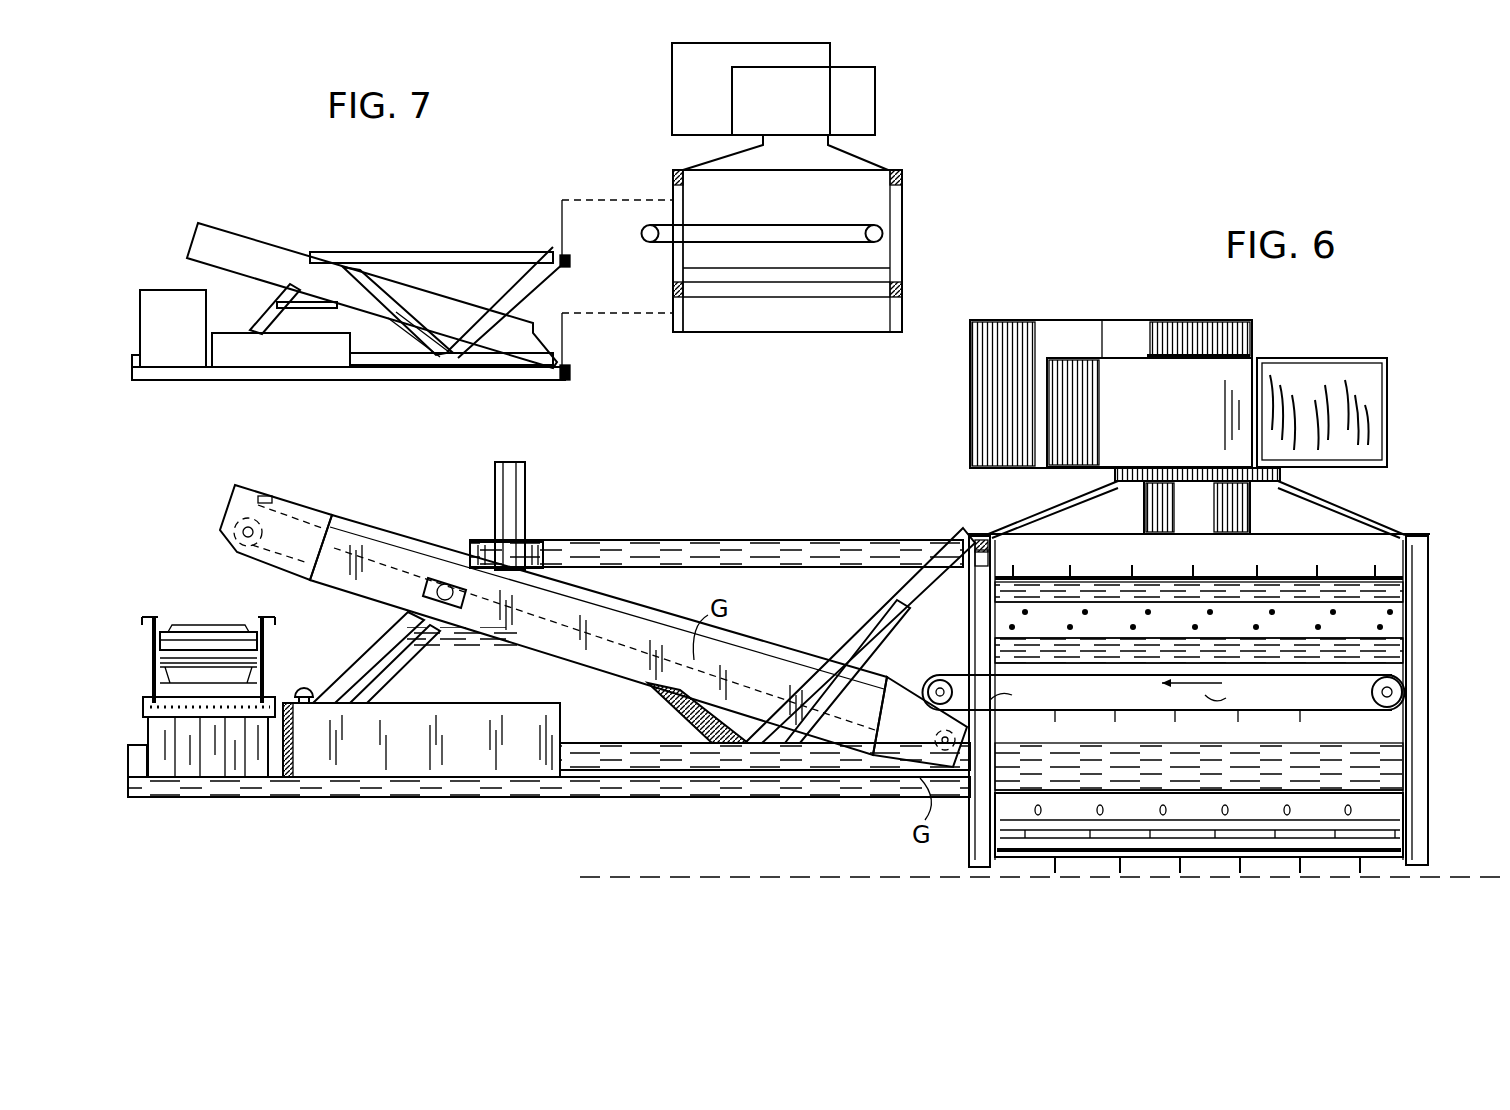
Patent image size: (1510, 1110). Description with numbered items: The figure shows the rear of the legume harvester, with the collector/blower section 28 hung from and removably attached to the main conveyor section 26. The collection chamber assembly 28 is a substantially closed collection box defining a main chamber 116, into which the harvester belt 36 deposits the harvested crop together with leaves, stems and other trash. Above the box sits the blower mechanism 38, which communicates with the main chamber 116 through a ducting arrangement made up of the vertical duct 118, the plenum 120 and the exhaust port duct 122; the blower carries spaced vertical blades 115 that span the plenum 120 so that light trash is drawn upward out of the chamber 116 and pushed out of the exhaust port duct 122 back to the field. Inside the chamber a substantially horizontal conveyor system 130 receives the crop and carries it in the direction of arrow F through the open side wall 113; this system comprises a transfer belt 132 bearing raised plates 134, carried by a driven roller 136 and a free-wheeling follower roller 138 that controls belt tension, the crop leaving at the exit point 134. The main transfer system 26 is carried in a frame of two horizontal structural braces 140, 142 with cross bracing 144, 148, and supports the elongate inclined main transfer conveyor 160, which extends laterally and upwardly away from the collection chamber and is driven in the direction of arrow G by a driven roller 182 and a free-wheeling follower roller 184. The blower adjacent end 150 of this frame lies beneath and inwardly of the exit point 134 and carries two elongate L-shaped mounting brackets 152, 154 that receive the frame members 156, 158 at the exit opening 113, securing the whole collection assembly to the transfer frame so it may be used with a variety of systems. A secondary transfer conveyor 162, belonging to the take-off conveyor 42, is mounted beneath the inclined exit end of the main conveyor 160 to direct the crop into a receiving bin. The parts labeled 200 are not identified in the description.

In FIG. 7, the main conveyor section 26 is at (412, 230).
In FIG. 6, the main conveyor section 26 is at (658, 592).
In FIG. 7, the collection chamber assembly 28 is at (824, 333).
In FIG. 6, the collection chamber assembly 28 is at (1442, 723).
In FIG. 6, the harvester belt 36 is at (1428, 588).
In FIG. 7, the blower mechanism 38 is at (850, 57).
In FIG. 6, the blower mechanism 38 is at (1245, 307).
In FIG. 7, the take-off conveyor 42 is at (165, 283).
In FIG. 6, the take-off conveyor 42 is at (187, 608).
In FIG. 7, the open side wall 113 is at (673, 260).
In FIG. 6, the open side wall 113 is at (952, 651).
In FIG. 6, the vertical blades 115 is at (1355, 378).
In FIG. 7, the main chamber 116 is at (862, 208).
In FIG. 6, the main chamber 116 is at (1390, 545).
In FIG. 6, the vertical duct 118 is at (1228, 507).
In FIG. 7, the plenum 120 is at (688, 52).
In FIG. 6, the plenum 120 is at (1253, 342).
In FIG. 7, the exhaust port duct 122 is at (877, 107).
In FIG. 6, the exhaust port duct 122 is at (1388, 418).
In FIG. 7, the horizontal conveyor system 130 is at (775, 228).
In FIG. 6, the horizontal conveyor system 130 is at (1403, 660).
In FIG. 6, the transfer belt 132 is at (1292, 712).
In FIG. 7, the raised plates 134 is at (632, 222).
In FIG. 6, the raised plates 134 is at (1233, 742).
In FIG. 6, the driven roller 136 is at (920, 722).
In FIG. 6, the free-wheeling follower roller 138 is at (1402, 690).
In FIG. 7, the horizontal structural brace 140 is at (470, 373).
In FIG. 6, the horizontal structural brace 140 is at (740, 797).
In FIG. 7, the horizontal structural brace 142 is at (397, 250).
In FIG. 6, the horizontal structural brace 142 is at (747, 540).
In FIG. 6, the cross bracing 144 is at (887, 607).
In FIG. 6, the cross bracing 148 is at (667, 703).
In FIG. 7, the blower adjacent end 150 is at (575, 275).
In FIG. 6, the blower adjacent end 150 is at (905, 772).
In FIG. 7, the L-shaped mounting bracket 152 is at (572, 372).
In FIG. 7, the L-shaped mounting bracket 154 is at (572, 258).
In FIG. 6, the L-shaped mounting bracket 154 is at (993, 557).
In FIG. 7, the frame member 156 is at (683, 297).
In FIG. 7, the frame member 158 is at (692, 177).
In FIG. 6, the frame member 158 is at (985, 538).
In FIG. 7, the main transfer conveyor 160 is at (229, 227).
In FIG. 6, the main transfer conveyor 160 is at (318, 513).
In FIG. 7, the secondary transfer conveyor 162 is at (178, 305).
In FIG. 6, the secondary transfer conveyor 162 is at (205, 638).
In FIG. 6, the driven roller 182 is at (877, 773).
In FIG. 6, the free-wheeling follower roller 184 is at (263, 492).
In FIG. 6, the spikes 200 is at (1385, 575).